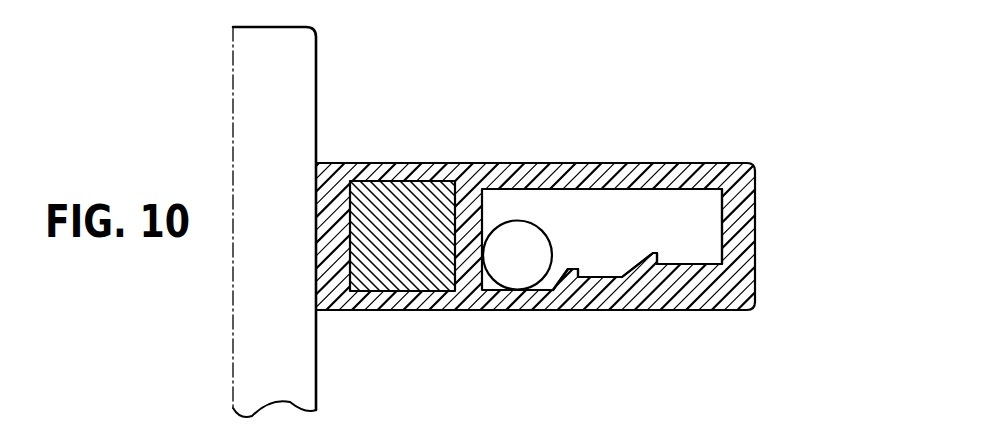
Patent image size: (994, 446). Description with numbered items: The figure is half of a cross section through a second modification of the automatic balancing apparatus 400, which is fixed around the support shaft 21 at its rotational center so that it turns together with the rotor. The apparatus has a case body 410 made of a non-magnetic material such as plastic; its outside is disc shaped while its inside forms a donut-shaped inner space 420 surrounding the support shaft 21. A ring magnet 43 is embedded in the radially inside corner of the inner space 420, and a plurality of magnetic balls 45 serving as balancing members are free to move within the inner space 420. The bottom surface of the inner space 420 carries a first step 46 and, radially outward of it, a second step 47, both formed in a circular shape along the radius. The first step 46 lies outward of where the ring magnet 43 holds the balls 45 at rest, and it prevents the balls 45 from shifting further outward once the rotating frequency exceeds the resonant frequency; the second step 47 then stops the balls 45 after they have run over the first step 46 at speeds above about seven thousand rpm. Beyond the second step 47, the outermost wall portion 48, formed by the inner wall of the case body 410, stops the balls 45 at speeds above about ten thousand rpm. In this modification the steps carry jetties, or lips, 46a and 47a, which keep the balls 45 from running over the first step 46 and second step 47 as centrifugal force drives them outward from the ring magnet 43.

The support shaft 21 is at (308, 77).
The automatic balancing apparatus 400 is at (776, 231).
The case body 410 is at (753, 197).
The inner space 420 is at (712, 250).
The ring magnet 43 is at (400, 291).
The magnetic balls 45 is at (518, 228).
The first step 46 is at (556, 291).
The jetty 46a is at (578, 268).
The second step 47 is at (635, 270).
The jetty 47a is at (653, 252).
The outermost wall portion 48 is at (722, 200).